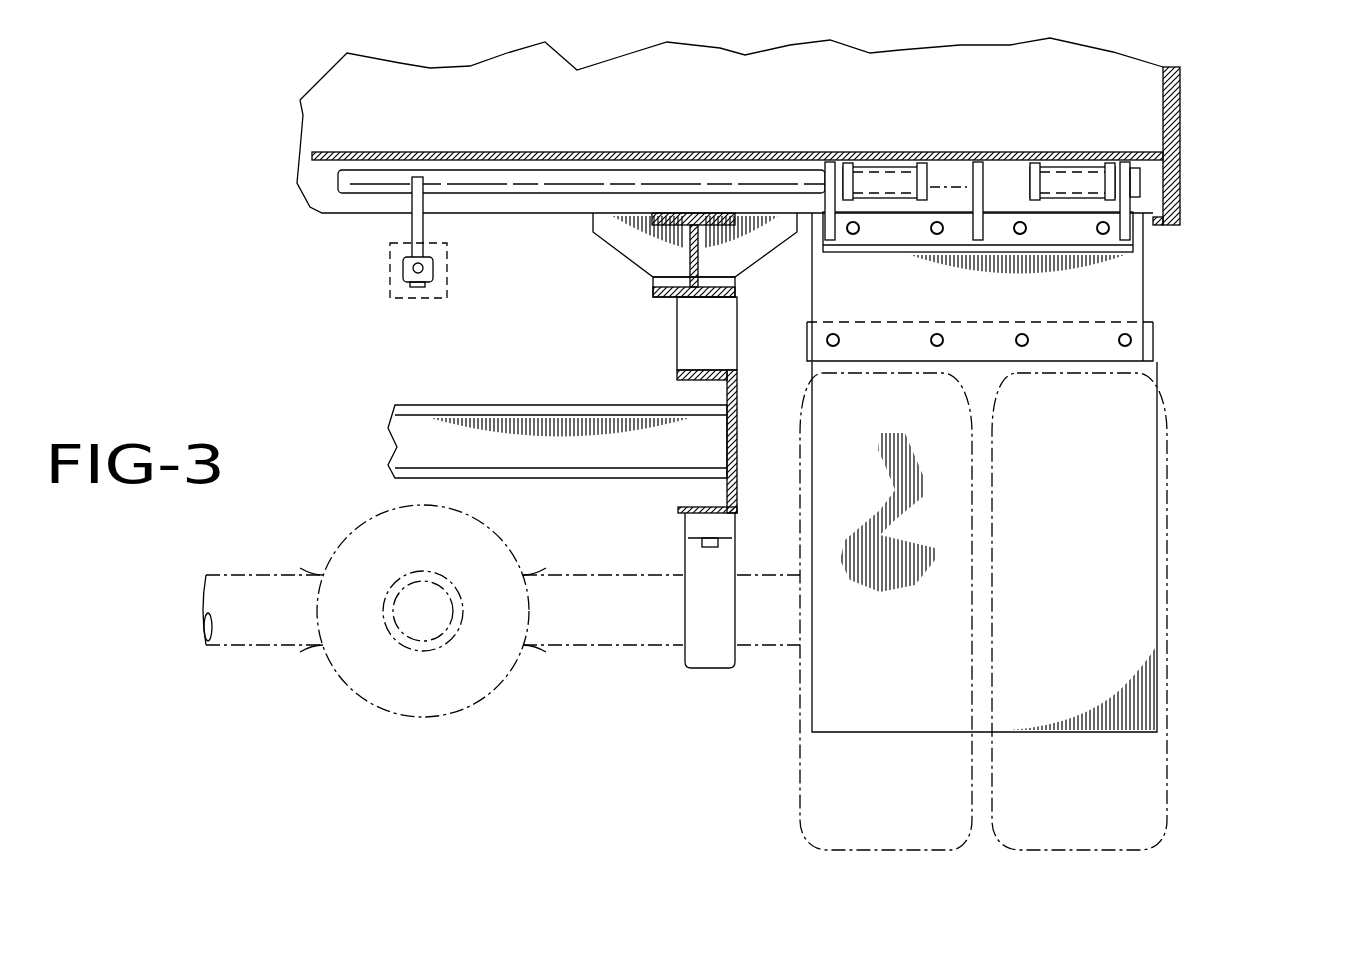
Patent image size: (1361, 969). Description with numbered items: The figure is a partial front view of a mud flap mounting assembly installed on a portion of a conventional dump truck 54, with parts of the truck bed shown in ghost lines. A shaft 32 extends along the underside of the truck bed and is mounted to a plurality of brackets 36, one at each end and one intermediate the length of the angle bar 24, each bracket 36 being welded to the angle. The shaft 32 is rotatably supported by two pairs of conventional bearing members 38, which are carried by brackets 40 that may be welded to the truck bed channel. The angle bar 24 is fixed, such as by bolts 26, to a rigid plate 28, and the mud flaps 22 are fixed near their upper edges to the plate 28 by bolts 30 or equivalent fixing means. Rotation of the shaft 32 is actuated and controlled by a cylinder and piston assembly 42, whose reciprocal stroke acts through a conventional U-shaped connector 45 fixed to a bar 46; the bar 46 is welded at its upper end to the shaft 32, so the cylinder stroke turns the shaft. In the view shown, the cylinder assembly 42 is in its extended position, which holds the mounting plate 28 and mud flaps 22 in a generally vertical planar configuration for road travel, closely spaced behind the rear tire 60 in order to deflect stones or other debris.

The mud flap 22 is at (1158, 372).
The angle bar 24 is at (1058, 222).
The bolts 26 is at (935, 234).
The rigid plate 28 is at (1148, 297).
The bolts 30 is at (1118, 343).
The shaft 32 is at (563, 183).
The bracket 36 is at (826, 178).
The bearing member 38 is at (882, 183).
The bracket 40 is at (848, 164).
The cylinder and piston assembly 42 is at (385, 264).
The U-shaped connector 45 is at (430, 280).
The bar 46 is at (418, 220).
The dump truck 54 is at (1207, 101).
The rear tire 60 is at (800, 800).